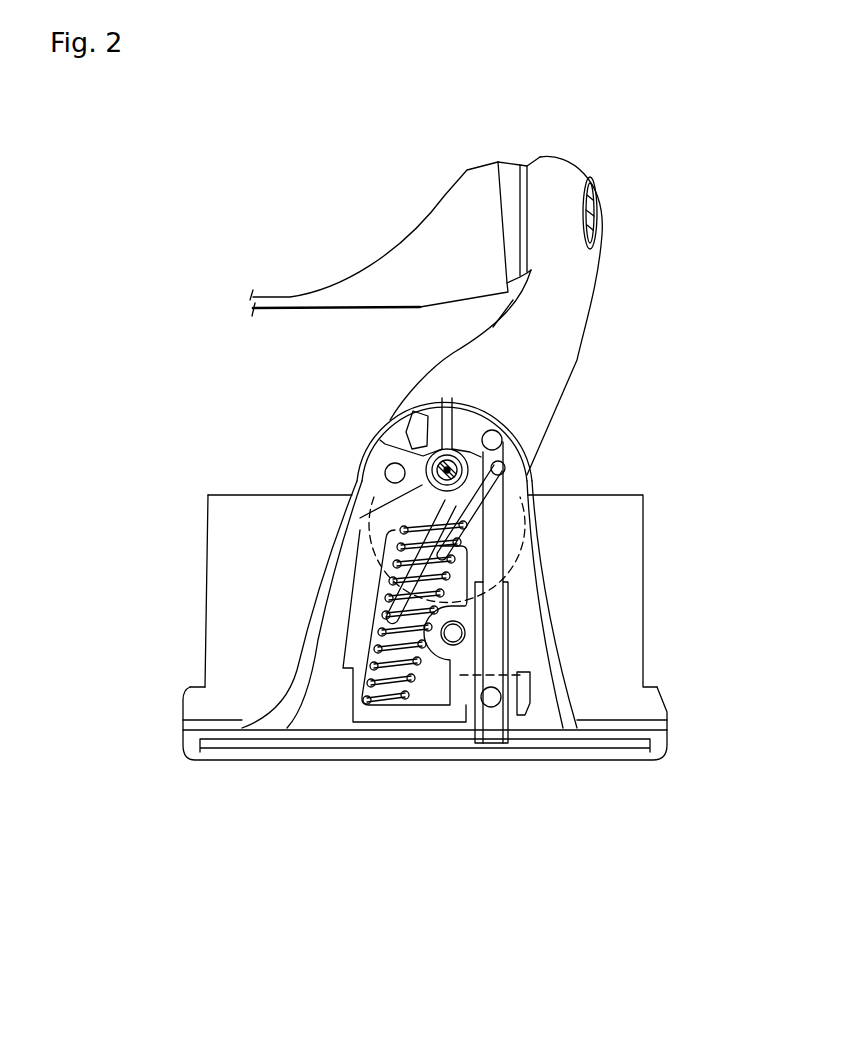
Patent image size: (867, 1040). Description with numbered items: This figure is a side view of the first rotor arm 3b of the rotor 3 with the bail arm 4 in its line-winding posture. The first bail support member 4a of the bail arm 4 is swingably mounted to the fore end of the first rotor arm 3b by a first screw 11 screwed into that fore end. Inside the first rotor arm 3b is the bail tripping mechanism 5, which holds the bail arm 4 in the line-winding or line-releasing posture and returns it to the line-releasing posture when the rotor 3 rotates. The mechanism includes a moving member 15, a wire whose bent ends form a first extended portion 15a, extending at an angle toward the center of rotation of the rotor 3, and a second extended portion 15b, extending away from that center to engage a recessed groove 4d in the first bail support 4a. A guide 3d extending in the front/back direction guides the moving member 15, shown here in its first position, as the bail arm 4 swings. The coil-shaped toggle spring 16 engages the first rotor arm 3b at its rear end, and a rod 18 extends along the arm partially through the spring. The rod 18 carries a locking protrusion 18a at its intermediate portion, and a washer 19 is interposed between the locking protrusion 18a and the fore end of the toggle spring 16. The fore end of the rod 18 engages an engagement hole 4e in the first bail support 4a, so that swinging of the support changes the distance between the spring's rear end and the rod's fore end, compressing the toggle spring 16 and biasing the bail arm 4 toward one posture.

The rotor 3 is at (205, 535).
The first rotor arm 3b is at (312, 600).
The guide 3d is at (510, 632).
The bail arm 4 is at (355, 230).
The first bail support member 4a is at (615, 272).
The recessed groove 4d is at (403, 403).
The engagement hole 4e is at (500, 470).
The bail tripping mechanism 5 is at (668, 412).
The first screw 11 is at (425, 455).
The moving member 15 is at (507, 567).
The first extended portion 15a is at (490, 700).
The second extended portion 15b is at (492, 440).
The toggle spring 16 is at (410, 550).
The rod 18 is at (390, 568).
The locking protrusion 18a is at (422, 485).
The washer 19 is at (483, 523).